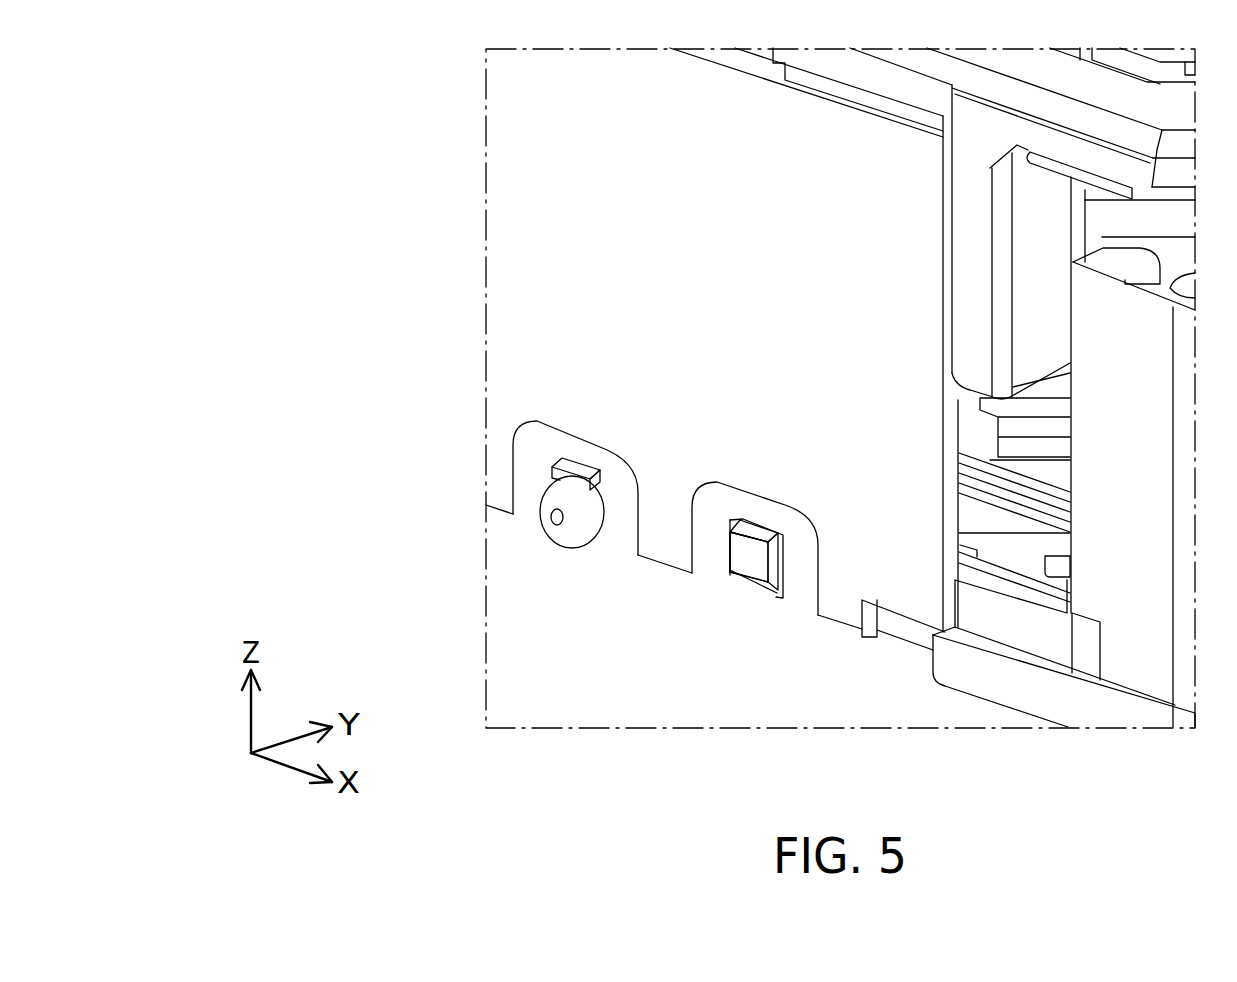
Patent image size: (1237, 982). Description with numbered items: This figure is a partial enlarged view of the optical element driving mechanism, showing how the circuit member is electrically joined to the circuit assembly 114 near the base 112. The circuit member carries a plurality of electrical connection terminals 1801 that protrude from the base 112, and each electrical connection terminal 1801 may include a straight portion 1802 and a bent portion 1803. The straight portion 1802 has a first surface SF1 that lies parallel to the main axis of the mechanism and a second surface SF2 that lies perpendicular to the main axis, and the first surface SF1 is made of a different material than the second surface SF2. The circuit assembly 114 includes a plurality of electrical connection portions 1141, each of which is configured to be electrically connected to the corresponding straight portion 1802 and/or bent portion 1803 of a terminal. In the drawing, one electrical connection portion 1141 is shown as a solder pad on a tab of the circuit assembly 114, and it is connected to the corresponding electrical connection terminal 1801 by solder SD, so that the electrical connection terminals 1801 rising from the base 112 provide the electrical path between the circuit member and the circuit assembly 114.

The circuit assembly 114 is at (513, 262).
The electrical connection portion 1141 is at (628, 537).
The electrical connection terminal 1801 is at (552, 475).
The straight portion 1802 is at (730, 558).
The bent portion 1803 is at (777, 597).
The solder SD is at (553, 520).
The first surface SF1 is at (753, 562).
The second surface SF2 is at (748, 527).
The base 112 is at (1007, 590).